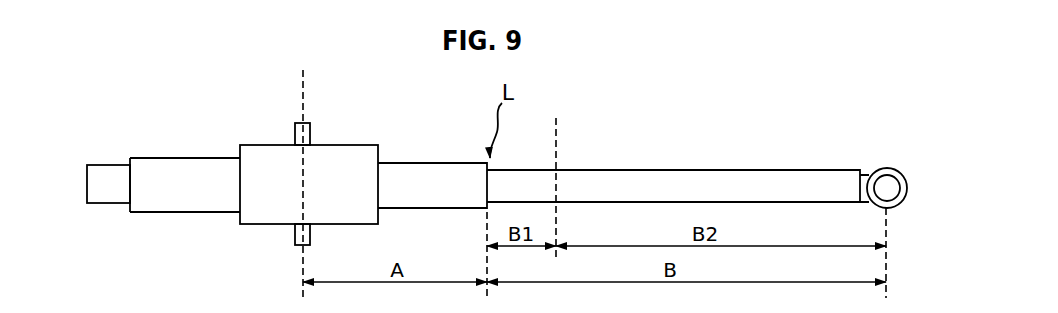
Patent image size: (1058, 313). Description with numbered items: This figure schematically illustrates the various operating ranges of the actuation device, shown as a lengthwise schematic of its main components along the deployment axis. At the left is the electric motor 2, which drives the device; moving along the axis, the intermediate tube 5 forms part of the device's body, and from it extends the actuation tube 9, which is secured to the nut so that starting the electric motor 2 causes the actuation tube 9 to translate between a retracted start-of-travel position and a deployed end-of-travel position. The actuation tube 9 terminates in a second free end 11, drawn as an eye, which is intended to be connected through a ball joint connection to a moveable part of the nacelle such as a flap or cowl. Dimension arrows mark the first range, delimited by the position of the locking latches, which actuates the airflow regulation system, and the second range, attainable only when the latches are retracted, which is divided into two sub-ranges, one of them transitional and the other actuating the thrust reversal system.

The electric motor 2 is at (198, 173).
The intermediate tube 5 is at (422, 178).
The actuation tube 9 is at (692, 183).
The second free end 11 is at (863, 173).